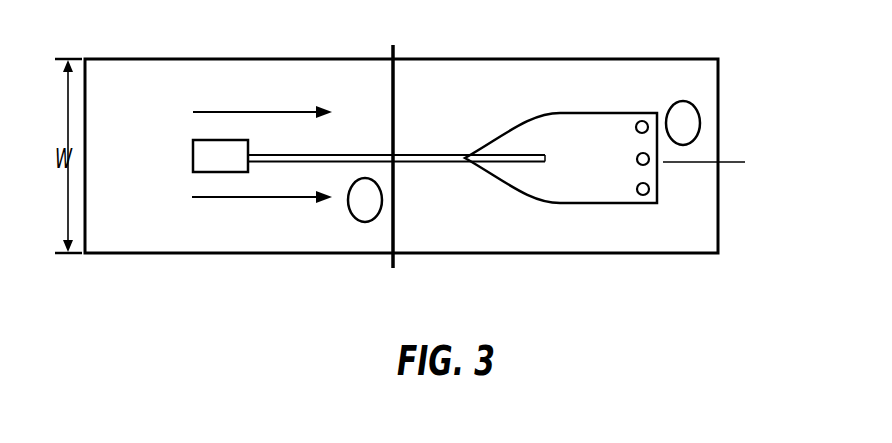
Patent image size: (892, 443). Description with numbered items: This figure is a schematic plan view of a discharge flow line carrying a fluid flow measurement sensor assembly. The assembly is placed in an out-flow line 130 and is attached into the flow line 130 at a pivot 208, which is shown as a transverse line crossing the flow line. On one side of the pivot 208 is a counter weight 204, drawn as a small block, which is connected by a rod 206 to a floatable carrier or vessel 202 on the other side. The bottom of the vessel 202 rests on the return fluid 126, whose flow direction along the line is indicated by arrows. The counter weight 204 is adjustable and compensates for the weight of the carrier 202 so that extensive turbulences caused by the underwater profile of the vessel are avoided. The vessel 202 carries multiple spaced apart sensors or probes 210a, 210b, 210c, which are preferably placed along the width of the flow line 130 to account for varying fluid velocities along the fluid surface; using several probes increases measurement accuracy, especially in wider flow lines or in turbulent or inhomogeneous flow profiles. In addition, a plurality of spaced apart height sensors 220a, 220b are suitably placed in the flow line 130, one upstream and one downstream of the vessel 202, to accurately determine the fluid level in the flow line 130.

The return fluid 126 is at (251, 135).
The out-flow line 130 is at (401, 181).
The floatable carrier or vessel 202 is at (616, 171).
The counter weight 204 is at (174, 139).
The rod 206 is at (398, 117).
The pivot 208 is at (443, 139).
The sensor or probe 210a is at (714, 82).
The sensor or probe 210b is at (727, 198).
The sensor or probe 210c is at (715, 236).
The height sensor 220a is at (309, 215).
The height sensor 220b is at (741, 108).